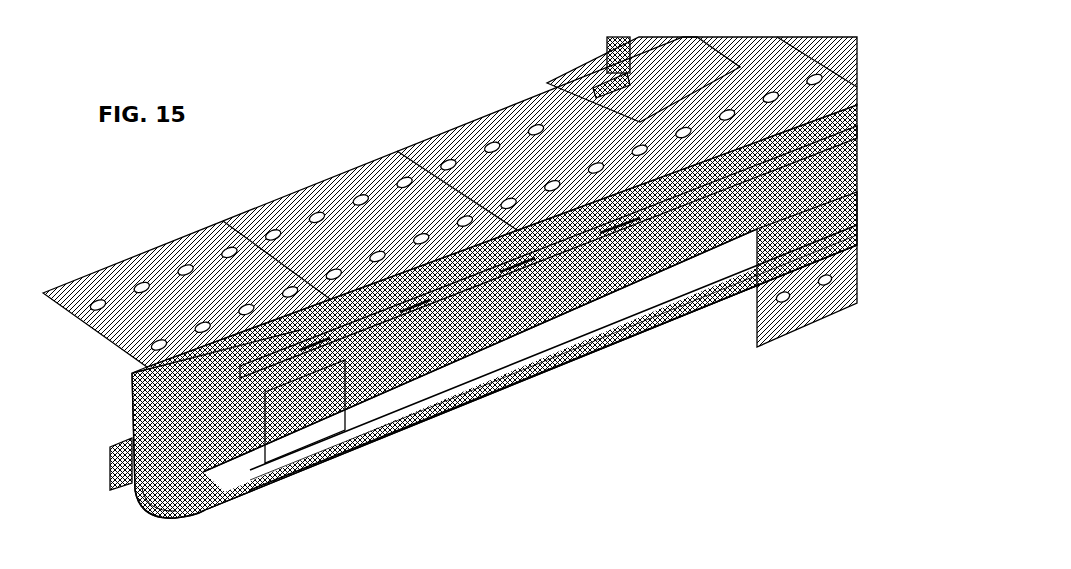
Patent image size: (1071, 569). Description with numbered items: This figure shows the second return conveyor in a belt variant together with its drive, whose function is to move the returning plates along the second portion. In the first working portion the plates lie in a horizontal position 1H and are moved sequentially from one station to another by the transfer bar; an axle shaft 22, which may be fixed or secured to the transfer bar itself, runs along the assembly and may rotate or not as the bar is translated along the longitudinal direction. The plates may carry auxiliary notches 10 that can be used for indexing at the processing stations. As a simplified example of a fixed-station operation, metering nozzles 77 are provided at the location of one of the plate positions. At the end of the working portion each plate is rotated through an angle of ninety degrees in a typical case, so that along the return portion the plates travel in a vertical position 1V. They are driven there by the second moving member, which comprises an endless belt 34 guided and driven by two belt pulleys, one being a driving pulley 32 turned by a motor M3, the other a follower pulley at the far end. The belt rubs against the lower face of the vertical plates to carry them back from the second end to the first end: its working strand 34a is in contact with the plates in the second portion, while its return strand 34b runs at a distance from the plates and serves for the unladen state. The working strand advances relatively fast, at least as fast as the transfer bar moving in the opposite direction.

The auxiliary notches 10 is at (177, 238).
The horizontal position 1H is at (320, 181).
The vertical position 1V is at (762, 322).
The axle shaft 22 is at (473, 282).
The driving pulley 32 is at (158, 510).
The endless belt 34 is at (603, 355).
The working strand 34a is at (473, 353).
The return strand 34b is at (468, 410).
The metering nozzles 77 is at (607, 47).
The motor M3 is at (322, 422).